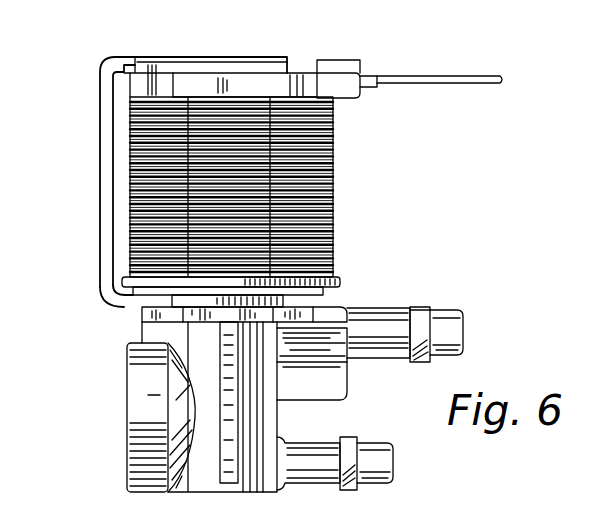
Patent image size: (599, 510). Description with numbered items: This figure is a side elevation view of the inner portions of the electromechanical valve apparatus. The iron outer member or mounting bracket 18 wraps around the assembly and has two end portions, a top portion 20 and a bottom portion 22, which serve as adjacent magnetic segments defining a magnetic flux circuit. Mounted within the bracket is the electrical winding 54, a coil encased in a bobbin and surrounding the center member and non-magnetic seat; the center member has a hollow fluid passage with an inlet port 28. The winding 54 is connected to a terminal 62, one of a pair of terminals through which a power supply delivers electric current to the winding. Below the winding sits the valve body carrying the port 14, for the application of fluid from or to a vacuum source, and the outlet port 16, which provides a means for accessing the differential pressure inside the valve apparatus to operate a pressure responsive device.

The port 14 is at (371, 465).
The outlet port 16 is at (443, 316).
The mounting bracket 18 is at (105, 176).
The top portion 20 is at (173, 60).
The bottom portion 22 is at (162, 296).
The inlet port 28 is at (95, 426).
The electrical winding 54 is at (337, 173).
The terminal 62 is at (418, 76).